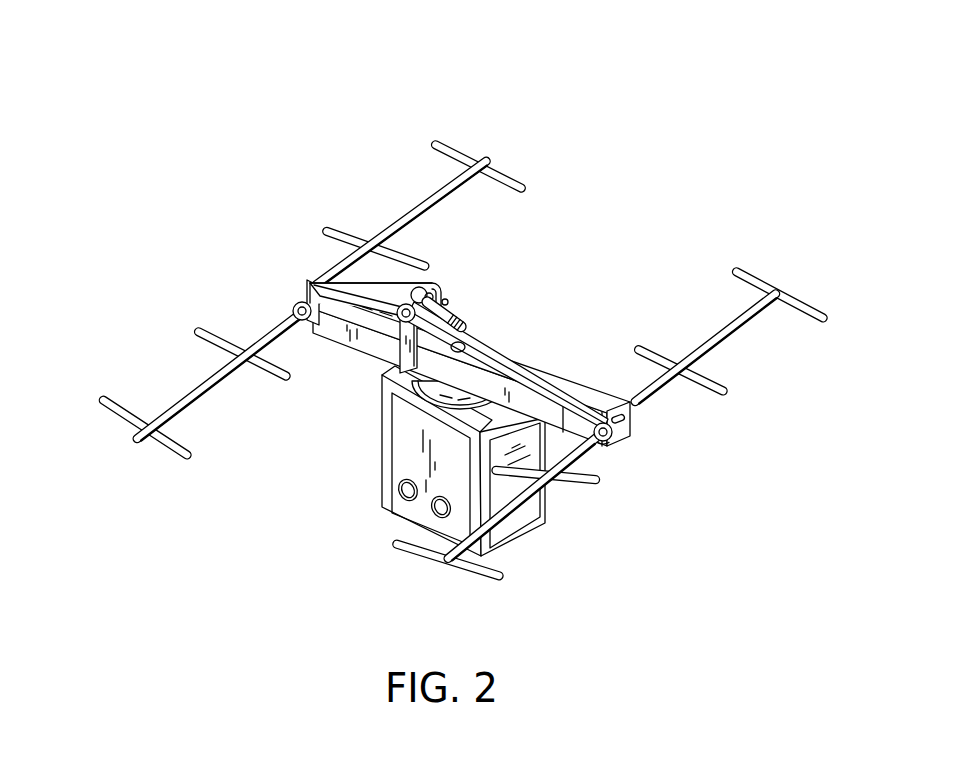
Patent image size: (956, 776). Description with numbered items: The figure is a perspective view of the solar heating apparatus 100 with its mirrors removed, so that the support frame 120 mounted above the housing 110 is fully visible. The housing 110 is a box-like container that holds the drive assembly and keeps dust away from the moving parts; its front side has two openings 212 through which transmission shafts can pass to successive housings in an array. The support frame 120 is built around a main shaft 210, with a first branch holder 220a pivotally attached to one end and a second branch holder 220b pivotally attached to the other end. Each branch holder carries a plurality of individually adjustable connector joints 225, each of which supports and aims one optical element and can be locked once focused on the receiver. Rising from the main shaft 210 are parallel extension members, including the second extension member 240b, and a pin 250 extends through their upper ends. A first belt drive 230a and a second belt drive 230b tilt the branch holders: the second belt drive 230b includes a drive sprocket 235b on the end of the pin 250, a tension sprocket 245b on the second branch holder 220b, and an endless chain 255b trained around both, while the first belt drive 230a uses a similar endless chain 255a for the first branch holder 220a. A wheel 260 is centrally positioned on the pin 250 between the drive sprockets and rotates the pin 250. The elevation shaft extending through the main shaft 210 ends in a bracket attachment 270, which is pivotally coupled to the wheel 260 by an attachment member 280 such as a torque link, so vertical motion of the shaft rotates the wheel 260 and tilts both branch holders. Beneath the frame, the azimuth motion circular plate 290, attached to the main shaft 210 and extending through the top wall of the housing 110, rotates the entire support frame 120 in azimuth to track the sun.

The solar heating apparatus 100 is at (218, 47).
The housing 110 is at (422, 461).
The support frame 120 is at (315, 163).
The main shaft 210 is at (558, 388).
The openings 212 is at (404, 500).
The first branch holder 220a is at (433, 195).
The second branch holder 220b is at (748, 332).
The connector joints 225 is at (510, 178).
The first belt drive 230a is at (446, 276).
The second belt drive 230b is at (475, 384).
The drive sprocket 235b is at (283, 332).
The second extension member 240b is at (398, 358).
The tension sprocket 245b is at (610, 443).
The pin 250 is at (320, 285).
The endless chain 255a is at (330, 282).
The endless chain 255b is at (493, 358).
The wheel 260 is at (413, 296).
The bracket attachment 270 is at (495, 322).
The attachment member 280 is at (452, 303).
The azimuth motion circular plate 290 is at (412, 383).